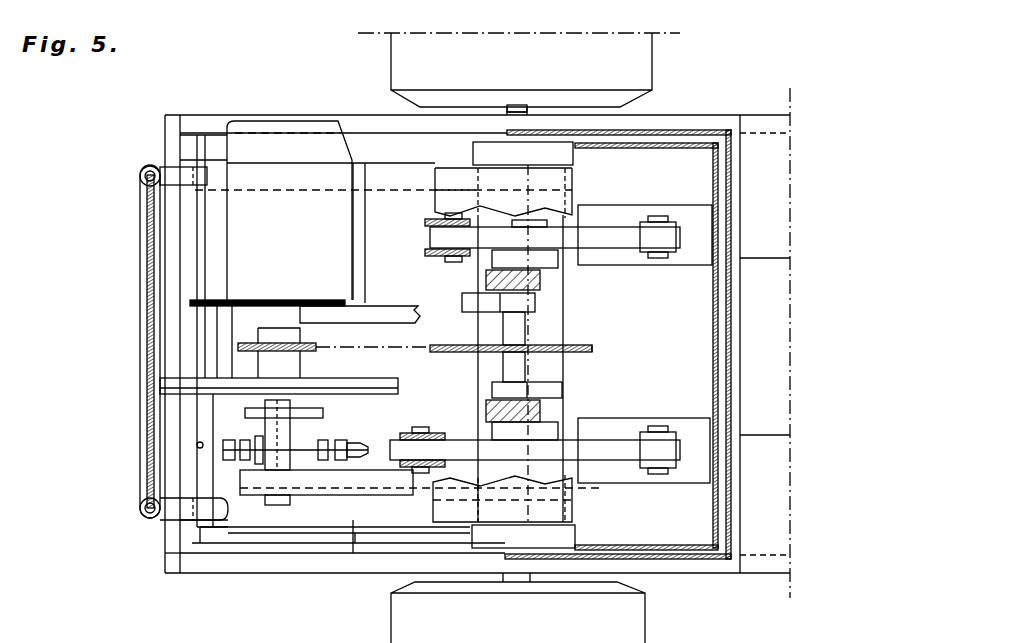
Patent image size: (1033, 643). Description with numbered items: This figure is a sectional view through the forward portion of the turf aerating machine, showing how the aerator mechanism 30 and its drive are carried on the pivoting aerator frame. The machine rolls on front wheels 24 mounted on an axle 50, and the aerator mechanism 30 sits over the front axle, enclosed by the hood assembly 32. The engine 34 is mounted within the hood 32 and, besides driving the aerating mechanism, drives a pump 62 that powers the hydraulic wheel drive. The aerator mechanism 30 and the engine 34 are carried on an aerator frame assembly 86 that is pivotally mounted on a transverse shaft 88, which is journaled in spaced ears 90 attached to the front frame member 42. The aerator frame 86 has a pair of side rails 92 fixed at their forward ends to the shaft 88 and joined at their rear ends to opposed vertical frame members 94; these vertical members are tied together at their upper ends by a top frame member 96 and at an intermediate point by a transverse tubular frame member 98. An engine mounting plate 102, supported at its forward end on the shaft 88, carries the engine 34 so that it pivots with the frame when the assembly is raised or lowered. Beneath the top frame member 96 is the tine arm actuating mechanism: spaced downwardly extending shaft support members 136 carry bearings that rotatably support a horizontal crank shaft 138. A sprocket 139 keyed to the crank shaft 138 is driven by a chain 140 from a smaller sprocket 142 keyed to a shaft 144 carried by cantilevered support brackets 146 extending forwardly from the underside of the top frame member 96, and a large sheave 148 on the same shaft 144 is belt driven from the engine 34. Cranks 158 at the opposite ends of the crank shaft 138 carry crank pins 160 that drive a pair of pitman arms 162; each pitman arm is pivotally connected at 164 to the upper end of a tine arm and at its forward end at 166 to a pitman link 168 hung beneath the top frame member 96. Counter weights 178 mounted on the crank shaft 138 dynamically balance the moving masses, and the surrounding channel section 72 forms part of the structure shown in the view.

The front wheels 24 is at (648, 82).
The aerator mechanism 30 is at (163, 520).
The hood assembly 32 is at (150, 262).
The engine 34 is at (268, 127).
The front frame member 42 is at (173, 552).
The axle 50 is at (540, 107).
The pump 62 is at (275, 432).
The channel frame 72 is at (775, 438).
The aerator frame assembly 86 is at (352, 522).
The transverse shaft 88 is at (200, 445).
The spaced ears 90 is at (187, 148).
The side rails 92 is at (370, 165).
The vertical frame members 94 is at (490, 150).
The top frame member 96 is at (548, 508).
The transverse tubular frame member 98 is at (565, 327).
The engine mounting plate 102 is at (386, 210).
The shaft support members 136 is at (540, 285).
The crank shaft 138 is at (513, 365).
The sprocket 139 is at (592, 346).
The chain 140 is at (393, 318).
The smaller sprocket 142 is at (246, 343).
The shaft 144 is at (280, 432).
The cantilevered support brackets 146 is at (309, 308).
The large sheave 148 is at (358, 388).
The cranks 158 is at (553, 259).
The crank pins 160 is at (528, 220).
The pitman arms 162 is at (604, 227).
The pivotal connection 164 is at (660, 218).
The pivotal connection 166 is at (455, 255).
The pitman links 168 is at (428, 235).
The counter weights 178 is at (476, 305).